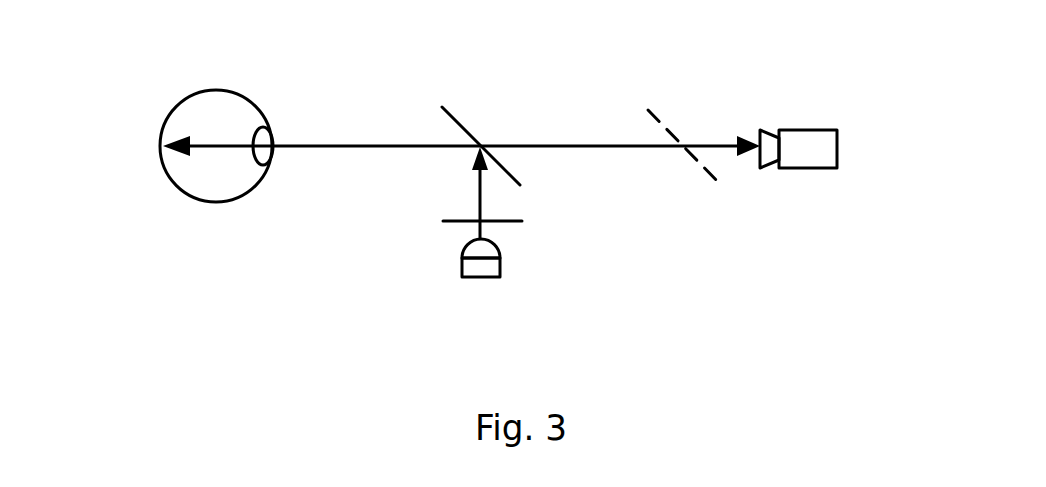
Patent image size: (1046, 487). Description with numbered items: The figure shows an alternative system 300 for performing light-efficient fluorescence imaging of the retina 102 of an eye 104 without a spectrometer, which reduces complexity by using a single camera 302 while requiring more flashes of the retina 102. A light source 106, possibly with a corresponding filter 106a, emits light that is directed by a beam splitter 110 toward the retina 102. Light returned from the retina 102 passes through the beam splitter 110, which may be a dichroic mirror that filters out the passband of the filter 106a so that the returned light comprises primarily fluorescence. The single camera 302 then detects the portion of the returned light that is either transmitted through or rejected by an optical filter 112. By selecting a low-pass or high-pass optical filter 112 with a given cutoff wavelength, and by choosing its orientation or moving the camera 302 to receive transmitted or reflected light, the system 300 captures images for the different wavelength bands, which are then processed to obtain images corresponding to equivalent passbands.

The retina 102 is at (165, 128).
The eye 104 is at (198, 163).
The light source 106 is at (497, 258).
The filter 106a is at (444, 221).
The beam splitter 110 is at (465, 127).
The optical filter 112 is at (668, 125).
The system 300 is at (798, 77).
The camera 302 is at (838, 145).